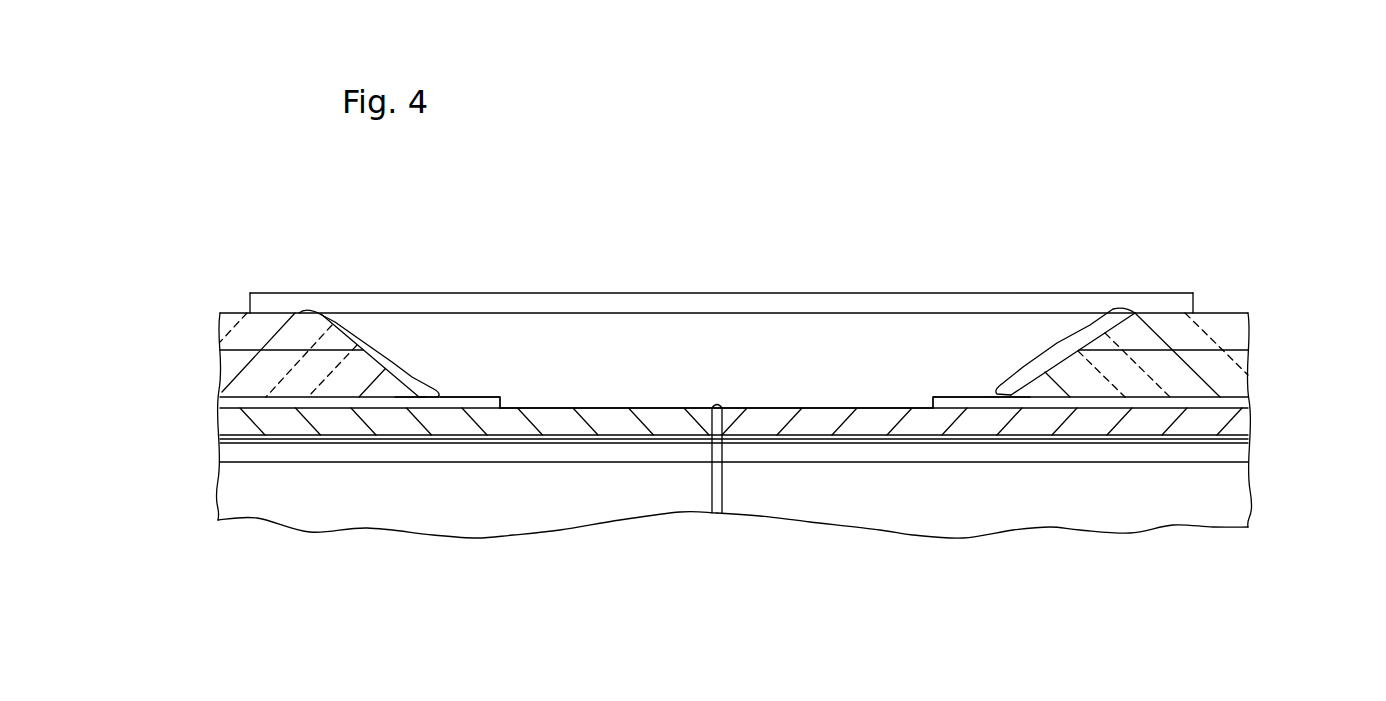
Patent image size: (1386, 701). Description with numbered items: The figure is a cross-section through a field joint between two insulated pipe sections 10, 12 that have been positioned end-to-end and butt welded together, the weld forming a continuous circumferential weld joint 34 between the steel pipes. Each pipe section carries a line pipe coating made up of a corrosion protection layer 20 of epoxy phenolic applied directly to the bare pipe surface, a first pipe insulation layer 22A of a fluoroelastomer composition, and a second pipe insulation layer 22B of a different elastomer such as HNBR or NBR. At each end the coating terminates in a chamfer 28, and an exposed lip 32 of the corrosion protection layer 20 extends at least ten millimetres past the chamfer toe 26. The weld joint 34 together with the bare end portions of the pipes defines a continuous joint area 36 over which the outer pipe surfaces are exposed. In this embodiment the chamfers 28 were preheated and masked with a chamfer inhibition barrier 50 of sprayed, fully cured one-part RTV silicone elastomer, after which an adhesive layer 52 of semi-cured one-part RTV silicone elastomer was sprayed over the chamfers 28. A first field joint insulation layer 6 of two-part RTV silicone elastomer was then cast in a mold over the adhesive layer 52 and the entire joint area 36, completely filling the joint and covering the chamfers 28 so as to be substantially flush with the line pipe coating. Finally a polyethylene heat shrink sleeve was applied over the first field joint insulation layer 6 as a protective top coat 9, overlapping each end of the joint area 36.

The first field joint insulation layer 6 is at (719, 375).
The top coat 9 is at (600, 302).
The insulated pipe section 10 is at (515, 513).
The insulated pipe section 12 is at (912, 517).
The corrosion protection layer 20 is at (220, 403).
The first pipe insulation layer 22A is at (218, 377).
The second pipe insulation layer 22B is at (220, 333).
The chamfer toe 26 is at (405, 395).
The chamfer 28 is at (358, 357).
The exposed lip 32 is at (455, 400).
The weld joint 34 is at (718, 515).
The joint area 36 is at (711, 284).
The chamfer inhibition barrier 50 is at (323, 318).
The adhesive layer 52 is at (335, 320).